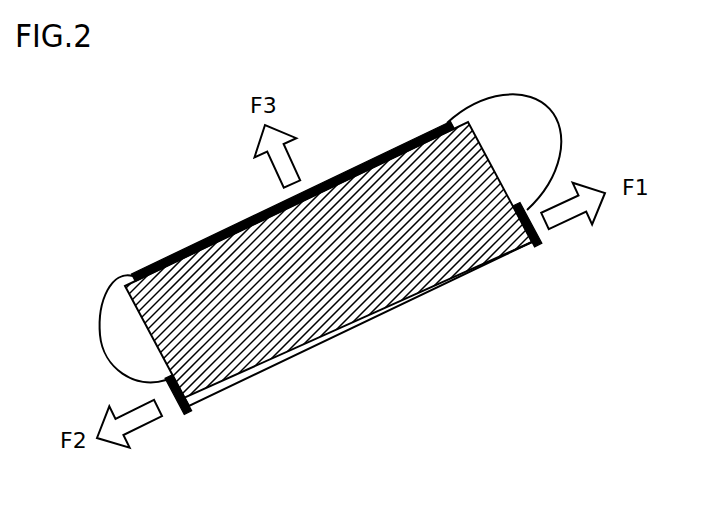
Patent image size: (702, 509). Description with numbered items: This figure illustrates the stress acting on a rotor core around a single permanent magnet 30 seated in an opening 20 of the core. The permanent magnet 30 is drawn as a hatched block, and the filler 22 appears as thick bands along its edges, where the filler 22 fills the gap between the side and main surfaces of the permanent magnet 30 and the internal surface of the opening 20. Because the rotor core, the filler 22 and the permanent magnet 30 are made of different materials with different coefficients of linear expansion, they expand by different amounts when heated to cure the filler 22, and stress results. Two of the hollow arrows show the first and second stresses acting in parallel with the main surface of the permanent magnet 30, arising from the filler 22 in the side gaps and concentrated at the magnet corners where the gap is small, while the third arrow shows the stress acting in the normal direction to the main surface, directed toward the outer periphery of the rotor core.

The opening 20 is at (117, 330).
The filler 22 is at (378, 156).
The permanent magnet 30 is at (203, 268).